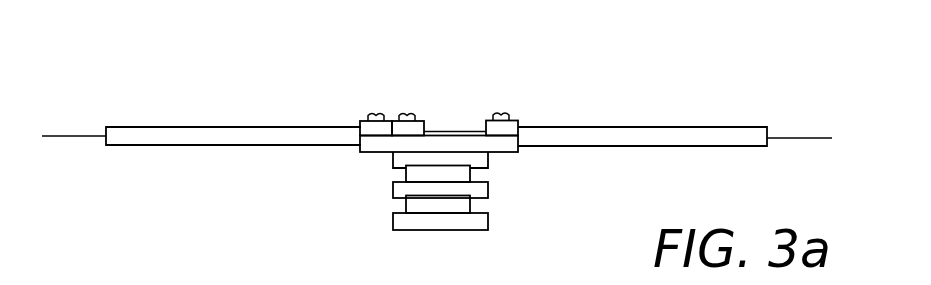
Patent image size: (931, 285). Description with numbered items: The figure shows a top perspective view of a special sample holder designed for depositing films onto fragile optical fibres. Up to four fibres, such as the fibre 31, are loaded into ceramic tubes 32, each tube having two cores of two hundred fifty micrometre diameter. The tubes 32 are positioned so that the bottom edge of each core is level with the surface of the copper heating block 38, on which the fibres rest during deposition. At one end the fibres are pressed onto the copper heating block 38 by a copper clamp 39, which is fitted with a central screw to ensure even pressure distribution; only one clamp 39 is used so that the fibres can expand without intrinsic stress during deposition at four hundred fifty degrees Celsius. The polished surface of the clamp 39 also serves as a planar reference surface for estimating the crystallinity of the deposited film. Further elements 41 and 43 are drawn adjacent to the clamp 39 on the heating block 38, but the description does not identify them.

The fibre 31 is at (62, 136).
The ceramic tube 32 is at (193, 127).
The copper heating block 38 is at (373, 144).
The copper clamp 39 is at (426, 119).
The contact pad 41 is at (362, 120).
The contact pad 43 is at (516, 122).